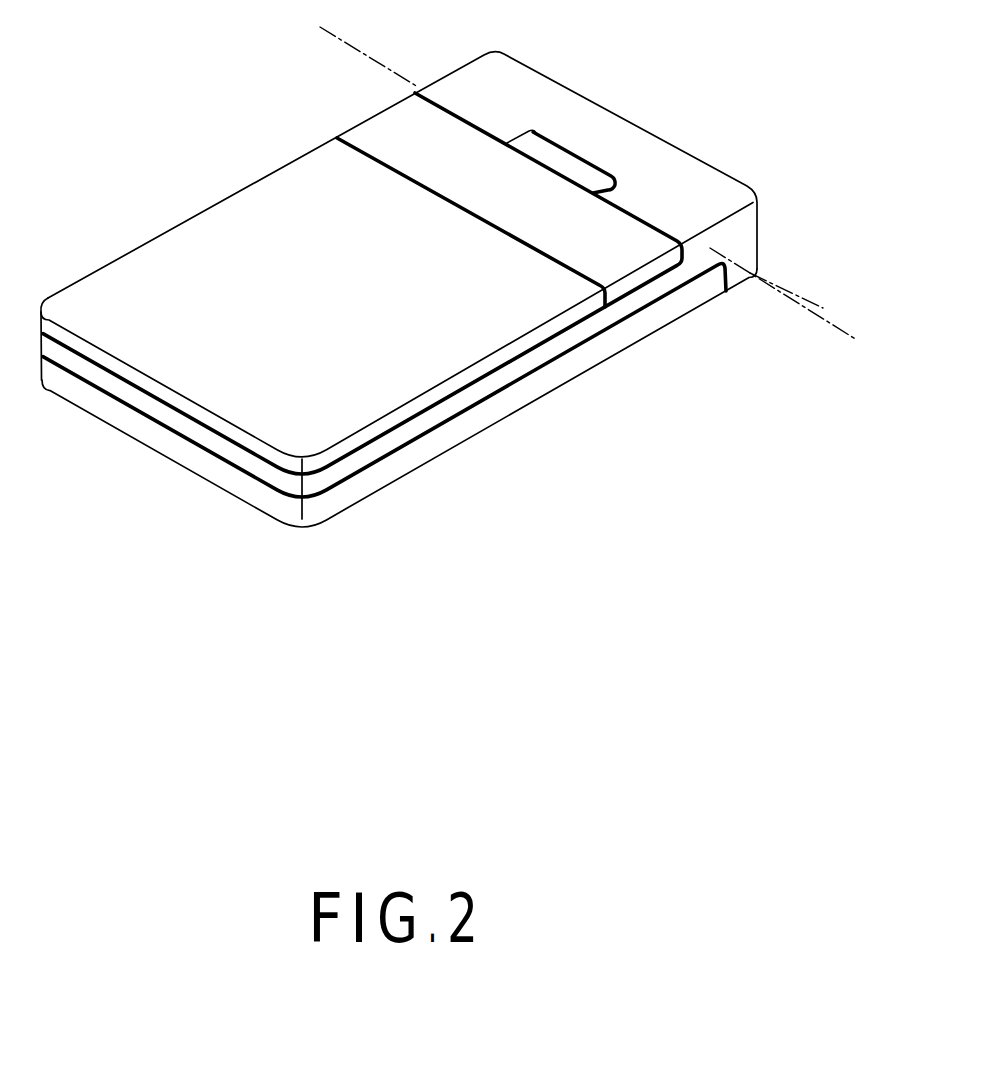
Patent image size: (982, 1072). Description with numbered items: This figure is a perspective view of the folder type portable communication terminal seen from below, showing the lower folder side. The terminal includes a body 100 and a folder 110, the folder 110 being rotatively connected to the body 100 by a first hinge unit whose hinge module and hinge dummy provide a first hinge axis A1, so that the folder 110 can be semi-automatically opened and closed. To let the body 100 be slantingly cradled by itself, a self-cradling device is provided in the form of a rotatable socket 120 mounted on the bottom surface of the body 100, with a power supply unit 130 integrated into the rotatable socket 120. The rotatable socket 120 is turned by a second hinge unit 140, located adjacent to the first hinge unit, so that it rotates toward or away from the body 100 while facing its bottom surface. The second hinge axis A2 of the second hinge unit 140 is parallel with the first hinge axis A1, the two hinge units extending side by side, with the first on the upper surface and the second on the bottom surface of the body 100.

The body 100 is at (180, 205).
The folder 110 is at (567, 392).
The rotatable socket 120 is at (623, 250).
The power supply unit 130 is at (377, 383).
The second hinge unit 140 is at (560, 160).
The first hinge axis A1 is at (604, 196).
The second hinge axis A2 is at (803, 296).